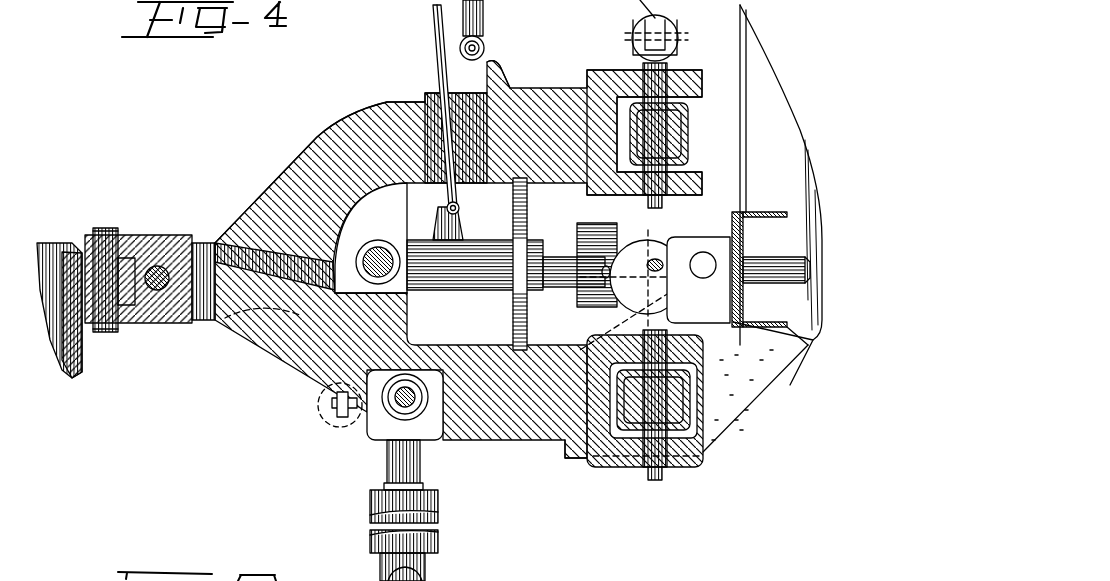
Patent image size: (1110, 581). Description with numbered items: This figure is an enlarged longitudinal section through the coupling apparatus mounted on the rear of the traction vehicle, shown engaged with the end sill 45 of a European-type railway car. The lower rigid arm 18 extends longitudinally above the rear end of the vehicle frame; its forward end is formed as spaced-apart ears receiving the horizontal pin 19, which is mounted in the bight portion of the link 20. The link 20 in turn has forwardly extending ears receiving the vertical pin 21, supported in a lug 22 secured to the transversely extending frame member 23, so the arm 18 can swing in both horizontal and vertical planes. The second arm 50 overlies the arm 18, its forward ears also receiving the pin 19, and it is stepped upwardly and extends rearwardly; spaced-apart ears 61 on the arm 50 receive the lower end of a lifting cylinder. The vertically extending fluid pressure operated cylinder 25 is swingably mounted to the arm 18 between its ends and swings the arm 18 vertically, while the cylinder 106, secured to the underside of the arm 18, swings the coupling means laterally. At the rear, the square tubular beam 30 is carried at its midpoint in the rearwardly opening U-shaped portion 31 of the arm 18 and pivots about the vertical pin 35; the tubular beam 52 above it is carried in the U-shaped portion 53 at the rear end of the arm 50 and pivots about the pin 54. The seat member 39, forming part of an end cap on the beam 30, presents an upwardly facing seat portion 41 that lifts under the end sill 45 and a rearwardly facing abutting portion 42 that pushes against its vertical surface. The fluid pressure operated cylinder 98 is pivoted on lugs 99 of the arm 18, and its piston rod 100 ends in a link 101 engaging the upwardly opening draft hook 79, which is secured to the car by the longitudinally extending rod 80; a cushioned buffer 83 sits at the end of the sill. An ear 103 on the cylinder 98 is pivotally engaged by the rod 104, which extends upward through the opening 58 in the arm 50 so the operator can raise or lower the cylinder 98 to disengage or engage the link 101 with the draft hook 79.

The lower rigid arm 18 is at (297, 352).
The pin 19 is at (160, 290).
The link 20 is at (182, 235).
The pin 21 is at (106, 230).
The lug 22 is at (125, 300).
The transversely extending member 23 is at (68, 360).
The fluid pressure operated cylinder 25 is at (440, 505).
The tubular beam 30 is at (700, 427).
The U-shaped portion 31 is at (590, 460).
The pin 35 is at (661, 470).
The seat member 39 is at (745, 402).
The seat portion 41 is at (808, 355).
The abutting portion 42 is at (748, 286).
The end sill 45 is at (742, 312).
The second arm 50 is at (333, 162).
The tubular beam 52 is at (690, 115).
The U-shaped portion 53 is at (590, 73).
The pin 54 is at (625, 67).
The opening 58 is at (430, 103).
The ears 61 is at (485, 60).
The draft hook 79 is at (658, 230).
The rod 80 is at (802, 195).
The cushioned buffer 83 is at (508, 323).
The fluid pressure operated cylinder 98 is at (482, 285).
The lugs 99 is at (343, 265).
The piston rod 100 is at (575, 282).
The link 101 is at (612, 250).
The ear 103 is at (440, 225).
The rod 104 is at (435, 50).
The fluid pressure operated cylinder 106 is at (335, 410).